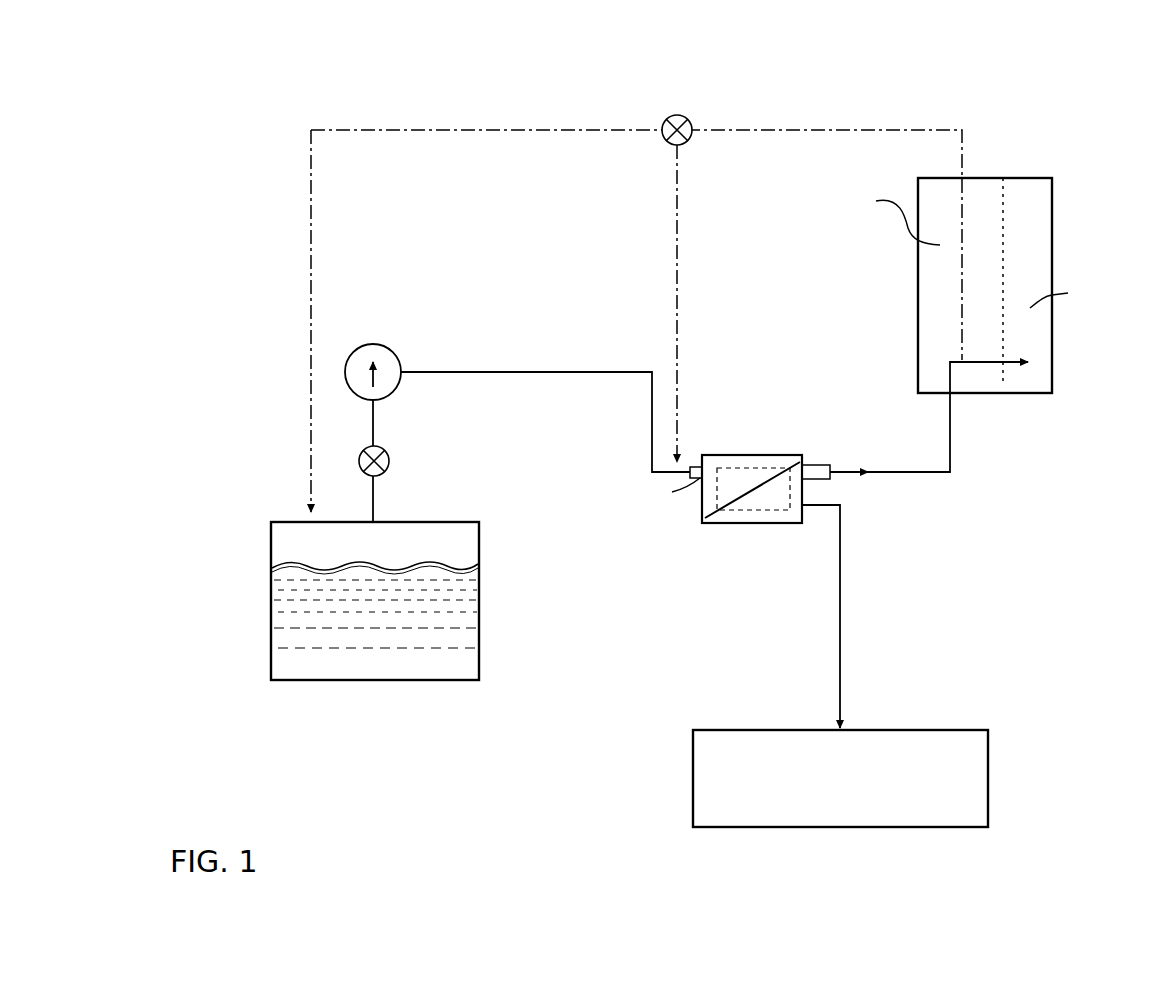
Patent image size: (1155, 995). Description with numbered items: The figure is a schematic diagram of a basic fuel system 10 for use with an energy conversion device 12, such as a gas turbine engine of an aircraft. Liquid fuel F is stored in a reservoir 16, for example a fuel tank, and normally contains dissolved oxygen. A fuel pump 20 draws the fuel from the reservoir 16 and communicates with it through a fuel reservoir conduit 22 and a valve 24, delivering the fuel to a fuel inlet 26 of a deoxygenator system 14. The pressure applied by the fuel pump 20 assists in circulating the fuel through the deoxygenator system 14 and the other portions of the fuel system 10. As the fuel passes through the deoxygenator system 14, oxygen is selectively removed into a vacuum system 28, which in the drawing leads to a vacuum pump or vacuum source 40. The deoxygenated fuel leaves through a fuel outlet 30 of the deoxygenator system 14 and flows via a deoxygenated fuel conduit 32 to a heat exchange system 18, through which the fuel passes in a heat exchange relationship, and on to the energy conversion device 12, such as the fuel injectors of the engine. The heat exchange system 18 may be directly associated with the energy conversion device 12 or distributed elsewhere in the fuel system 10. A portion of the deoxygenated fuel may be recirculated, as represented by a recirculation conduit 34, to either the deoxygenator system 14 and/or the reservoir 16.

The fuel system 10 is at (1040, 156).
The energy conversion device 12 is at (1030, 196).
The deoxygenator system 14 is at (782, 440).
The reservoir 16 is at (298, 670).
The heat exchange system 18 is at (930, 318).
The fuel pump 20 is at (370, 345).
The fuel reservoir conduit 22 is at (376, 425).
The valve 24 is at (390, 461).
The fuel inlet 26 is at (662, 492).
The vacuum system 28 is at (905, 572).
The fuel outlet 30 is at (806, 462).
The deoxygenated fuel conduit 32 is at (952, 458).
The recirculation conduit 34 is at (742, 128).
The vacuum pump or vacuum source 40 is at (982, 806).